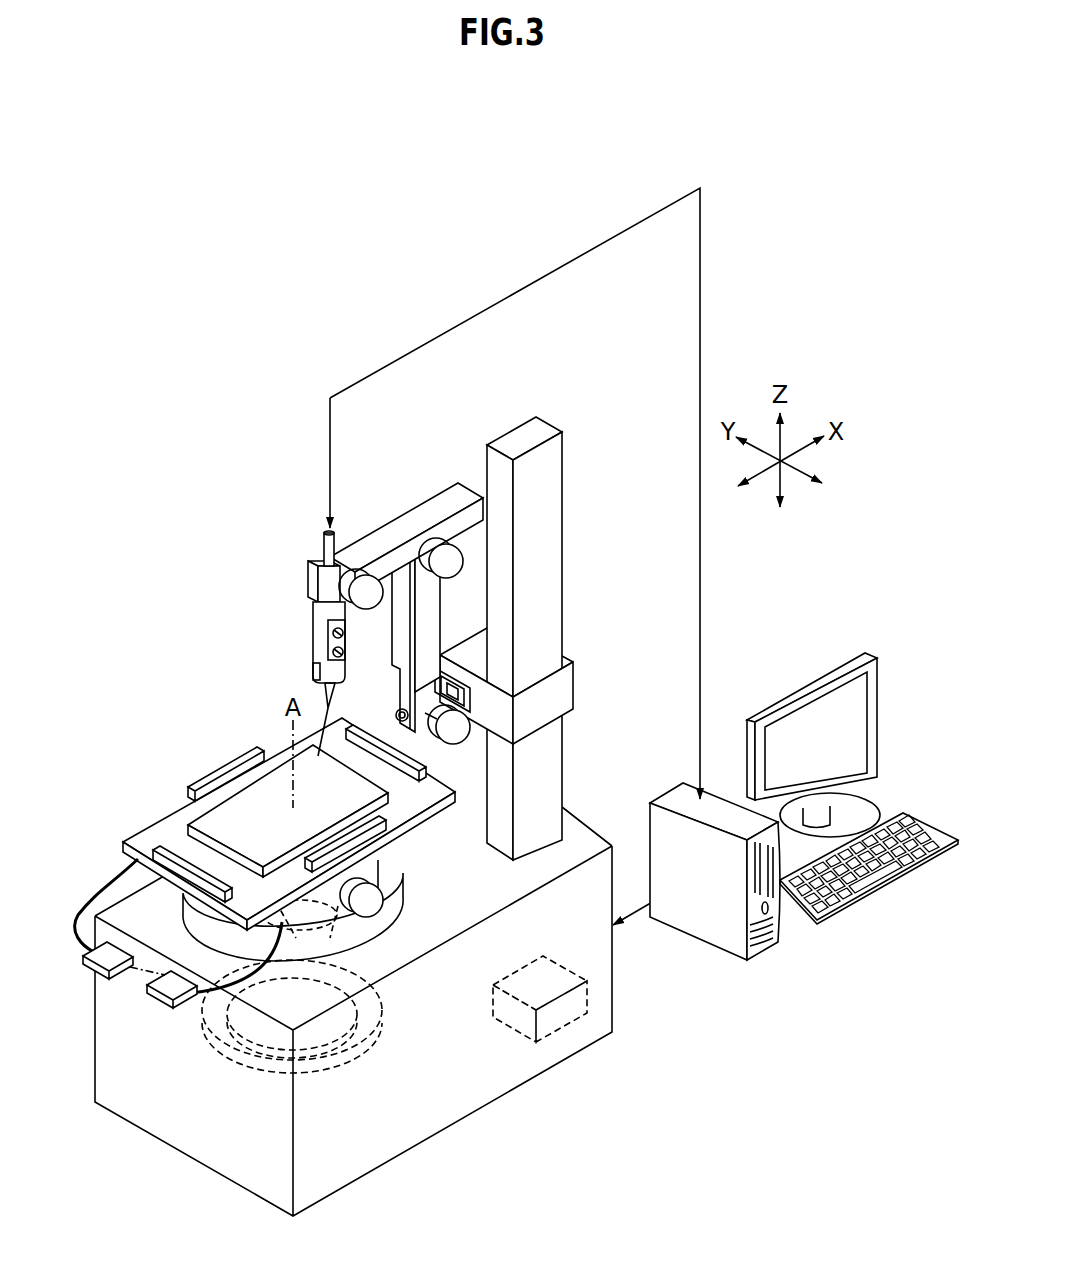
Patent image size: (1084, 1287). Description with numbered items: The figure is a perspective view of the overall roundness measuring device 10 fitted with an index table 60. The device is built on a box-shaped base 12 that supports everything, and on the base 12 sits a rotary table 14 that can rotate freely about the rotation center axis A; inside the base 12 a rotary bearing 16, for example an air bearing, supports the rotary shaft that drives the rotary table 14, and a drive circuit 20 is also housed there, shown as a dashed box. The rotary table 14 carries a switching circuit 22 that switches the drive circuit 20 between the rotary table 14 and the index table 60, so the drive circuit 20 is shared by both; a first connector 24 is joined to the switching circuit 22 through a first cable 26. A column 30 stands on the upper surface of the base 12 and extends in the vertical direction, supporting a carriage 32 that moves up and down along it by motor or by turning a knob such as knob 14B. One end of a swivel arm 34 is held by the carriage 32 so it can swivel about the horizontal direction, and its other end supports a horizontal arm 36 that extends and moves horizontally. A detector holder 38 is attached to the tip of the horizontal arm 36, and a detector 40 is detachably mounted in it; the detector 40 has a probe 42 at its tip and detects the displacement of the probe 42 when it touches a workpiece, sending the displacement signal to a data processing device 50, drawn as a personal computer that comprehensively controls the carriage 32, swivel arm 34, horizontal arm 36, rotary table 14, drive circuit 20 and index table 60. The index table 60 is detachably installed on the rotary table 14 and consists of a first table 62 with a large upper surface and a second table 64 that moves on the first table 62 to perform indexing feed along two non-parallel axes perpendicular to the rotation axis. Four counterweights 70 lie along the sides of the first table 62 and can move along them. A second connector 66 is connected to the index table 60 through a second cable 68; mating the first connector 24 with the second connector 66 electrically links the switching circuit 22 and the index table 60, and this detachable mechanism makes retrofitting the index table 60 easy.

The roundness measuring device 10 is at (214, 545).
The base 12 is at (472, 1073).
The rotary table 14 is at (383, 863).
The knob of rotary table 14B is at (374, 903).
The rotary bearing 16 is at (338, 1035).
The drive circuit 20 is at (565, 1012).
The switching circuit 22 is at (342, 924).
The first connector 24 is at (158, 1000).
The first cable 26 is at (217, 995).
The column 30 is at (545, 530).
The carriage 32 is at (555, 698).
The swivel arm 34 is at (428, 613).
The horizontal arm 36 is at (410, 527).
The detector holder 38 is at (312, 597).
The detector 40 is at (302, 665).
The probe 42 is at (322, 712).
The data processing device 50 is at (816, 680).
The index table 60 is at (274, 803).
The first table 62 is at (172, 822).
The second table 64 is at (260, 837).
The second connector 66 is at (84, 976).
The second cable 68 is at (97, 905).
The counterweights 70 is at (340, 843).